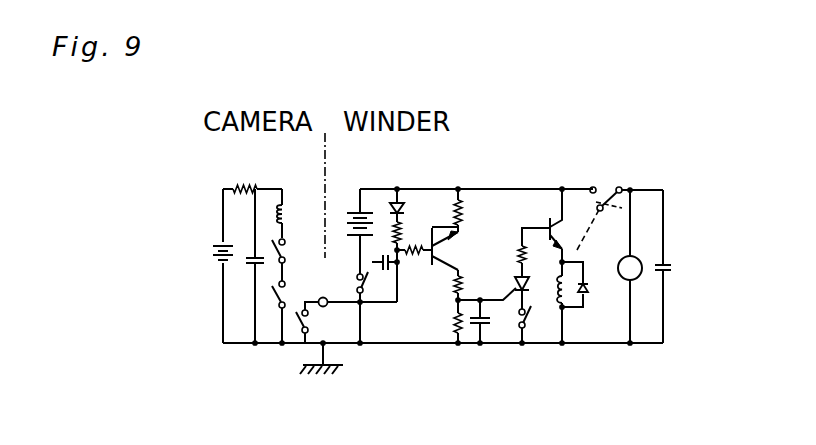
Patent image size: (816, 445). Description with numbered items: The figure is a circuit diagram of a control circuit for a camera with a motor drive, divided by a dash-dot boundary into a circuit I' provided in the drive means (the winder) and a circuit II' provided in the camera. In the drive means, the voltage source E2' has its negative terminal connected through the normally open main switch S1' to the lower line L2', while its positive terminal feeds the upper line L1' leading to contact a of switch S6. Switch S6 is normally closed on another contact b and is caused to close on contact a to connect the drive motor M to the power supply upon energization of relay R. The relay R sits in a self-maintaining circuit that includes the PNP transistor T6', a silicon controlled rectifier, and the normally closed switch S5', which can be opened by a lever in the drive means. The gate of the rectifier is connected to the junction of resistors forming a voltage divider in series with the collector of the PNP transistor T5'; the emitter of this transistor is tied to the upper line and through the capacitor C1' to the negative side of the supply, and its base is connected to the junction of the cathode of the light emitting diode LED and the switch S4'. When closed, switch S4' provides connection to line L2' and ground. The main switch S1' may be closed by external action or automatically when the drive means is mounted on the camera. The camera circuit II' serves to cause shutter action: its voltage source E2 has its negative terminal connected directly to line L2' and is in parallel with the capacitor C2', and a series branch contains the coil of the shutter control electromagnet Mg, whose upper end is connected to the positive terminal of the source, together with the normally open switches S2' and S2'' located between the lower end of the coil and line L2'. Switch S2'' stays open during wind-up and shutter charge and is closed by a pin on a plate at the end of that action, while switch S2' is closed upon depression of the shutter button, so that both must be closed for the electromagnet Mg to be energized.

The camera circuit II' is at (257, 154).
The drive means circuit I' is at (369, 154).
The shutter control electromagnet Mg is at (288, 208).
The voltage source E2 is at (206, 249).
The capacitor C2' is at (222, 293).
The normally open switch S2'' is at (306, 259).
The normally open switch S2' is at (262, 336).
The switch S4' is at (320, 366).
The normally open main switch S1' is at (349, 269).
The voltage source E2' is at (357, 195).
The line L1' is at (476, 160).
The light emitting diode LED is at (411, 205).
The PNP transistor T5' is at (469, 232).
The PNP transistor T6' is at (540, 225).
The capacitor C1' is at (501, 321).
The normally closed switch S5' is at (539, 347).
The relay R is at (564, 302).
The switch S6 is at (607, 191).
The contact a is at (589, 177).
The contact b is at (606, 230).
The drive motor M is at (644, 267).
The line L2' is at (424, 388).